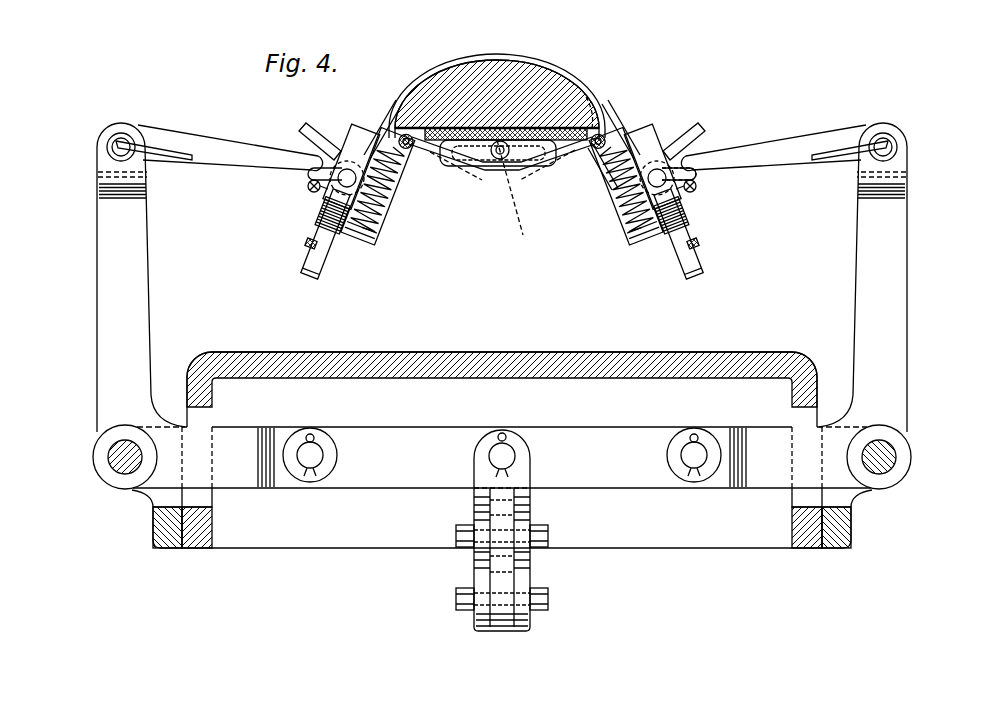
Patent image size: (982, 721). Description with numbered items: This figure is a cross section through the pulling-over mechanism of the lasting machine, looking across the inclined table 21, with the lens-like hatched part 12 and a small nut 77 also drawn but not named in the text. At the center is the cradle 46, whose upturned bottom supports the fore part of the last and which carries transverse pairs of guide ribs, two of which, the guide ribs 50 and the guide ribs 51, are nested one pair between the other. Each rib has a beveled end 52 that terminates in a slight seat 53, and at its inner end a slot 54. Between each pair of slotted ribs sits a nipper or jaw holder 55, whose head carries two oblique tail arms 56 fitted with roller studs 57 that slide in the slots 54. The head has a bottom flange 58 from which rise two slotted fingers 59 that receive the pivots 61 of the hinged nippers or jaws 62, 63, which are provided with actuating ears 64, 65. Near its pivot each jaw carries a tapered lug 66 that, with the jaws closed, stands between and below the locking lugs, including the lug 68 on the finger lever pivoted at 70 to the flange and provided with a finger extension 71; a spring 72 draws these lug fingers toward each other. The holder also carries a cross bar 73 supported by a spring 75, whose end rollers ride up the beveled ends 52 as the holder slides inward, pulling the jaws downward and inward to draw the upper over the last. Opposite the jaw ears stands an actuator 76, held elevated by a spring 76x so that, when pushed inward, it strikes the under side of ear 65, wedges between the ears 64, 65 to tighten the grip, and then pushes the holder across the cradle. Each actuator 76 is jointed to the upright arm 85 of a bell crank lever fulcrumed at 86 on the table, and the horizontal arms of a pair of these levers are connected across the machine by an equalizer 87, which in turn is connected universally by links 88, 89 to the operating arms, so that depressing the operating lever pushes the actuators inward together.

The lens 12 is at (680, 283).
The inclined table 21 is at (607, 372).
The cradle 46 is at (503, 160).
The guide ribs 50 is at (431, 138).
The guide ribs 51 is at (588, 95).
The beveled end 52 is at (413, 148).
The seat 53 is at (452, 162).
The slot 54 is at (552, 75).
The nipper or jaw holder 55 is at (620, 212).
The tail arms 56 is at (445, 170).
The roller studs 57 is at (500, 166).
The bottom flange 58 is at (372, 240).
The fingers 59 is at (388, 190).
The pivots 61 is at (604, 180).
The nipper or jaw 62 is at (394, 110).
The nipper or jaw 63 is at (372, 128).
The actuating ear 64 is at (310, 174).
The actuating ear 65 is at (320, 146).
The tapered lug 66 is at (652, 160).
The locking lug 68 is at (651, 165).
The pivot 70 is at (314, 210).
The finger extensions 71 is at (302, 262).
The spring 72 is at (307, 188).
The cross bar 73 is at (354, 160).
The spring 75 is at (386, 212).
The actuator 76 is at (229, 148).
The spring 76x is at (858, 120).
The nut 77 is at (340, 252).
The upright arms 85 is at (108, 330).
The fulcrum 86 is at (118, 457).
The equalizer 87 is at (428, 472).
The link 88 is at (520, 467).
The link 89 is at (480, 565).